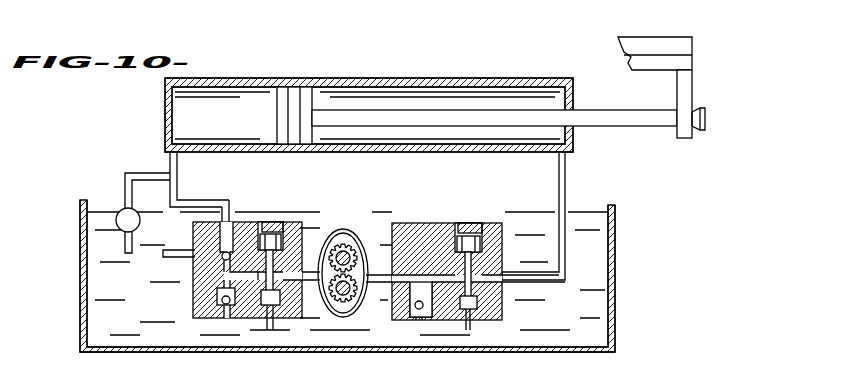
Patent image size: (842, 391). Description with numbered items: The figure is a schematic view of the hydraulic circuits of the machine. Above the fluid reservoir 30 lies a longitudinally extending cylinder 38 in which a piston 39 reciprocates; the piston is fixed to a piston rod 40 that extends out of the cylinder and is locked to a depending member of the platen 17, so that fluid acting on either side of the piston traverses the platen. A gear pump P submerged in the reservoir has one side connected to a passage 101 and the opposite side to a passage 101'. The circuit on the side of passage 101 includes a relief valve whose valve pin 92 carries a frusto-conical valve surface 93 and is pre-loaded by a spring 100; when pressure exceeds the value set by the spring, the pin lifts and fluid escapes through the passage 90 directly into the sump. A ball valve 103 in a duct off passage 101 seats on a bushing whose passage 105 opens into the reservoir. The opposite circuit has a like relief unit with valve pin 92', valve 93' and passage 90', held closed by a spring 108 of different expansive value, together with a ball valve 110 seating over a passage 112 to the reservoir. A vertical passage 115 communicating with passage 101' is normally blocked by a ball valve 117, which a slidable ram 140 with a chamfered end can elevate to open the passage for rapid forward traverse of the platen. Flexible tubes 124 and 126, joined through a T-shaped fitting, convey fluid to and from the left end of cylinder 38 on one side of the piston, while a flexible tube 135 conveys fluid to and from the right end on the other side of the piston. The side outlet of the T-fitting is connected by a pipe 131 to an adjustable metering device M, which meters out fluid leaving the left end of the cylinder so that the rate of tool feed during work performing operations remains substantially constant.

The platen 17 is at (692, 46).
The fluid reservoir 30 is at (103, 337).
The cylinder 38 is at (428, 82).
The piston 39 is at (294, 92).
The piston rod 40 is at (500, 110).
The passage 90 is at (473, 310).
The passage 90' is at (274, 309).
The valve pin 92 is at (533, 239).
The valve pin 92' is at (319, 328).
The frusto-conical valve surface 93 is at (493, 340).
The valve 93' is at (290, 337).
The spring 100 is at (468, 228).
The passage 101 is at (446, 285).
The passage 101' is at (299, 200).
The ball valve 103 is at (412, 308).
The passage 105 is at (418, 310).
The spring 108 is at (282, 224).
The ball valve 110 is at (221, 305).
The passage 112 is at (236, 312).
The vertical passage 115 is at (238, 276).
The ball valve 117 is at (243, 225).
The flexible tube 124 is at (206, 199).
The flexible tube 126 is at (178, 170).
The pipe 131 is at (148, 173).
The flexible tube 135 is at (566, 195).
The ram 140 is at (163, 255).
The metering device M is at (117, 210).
The gear pump P is at (364, 230).